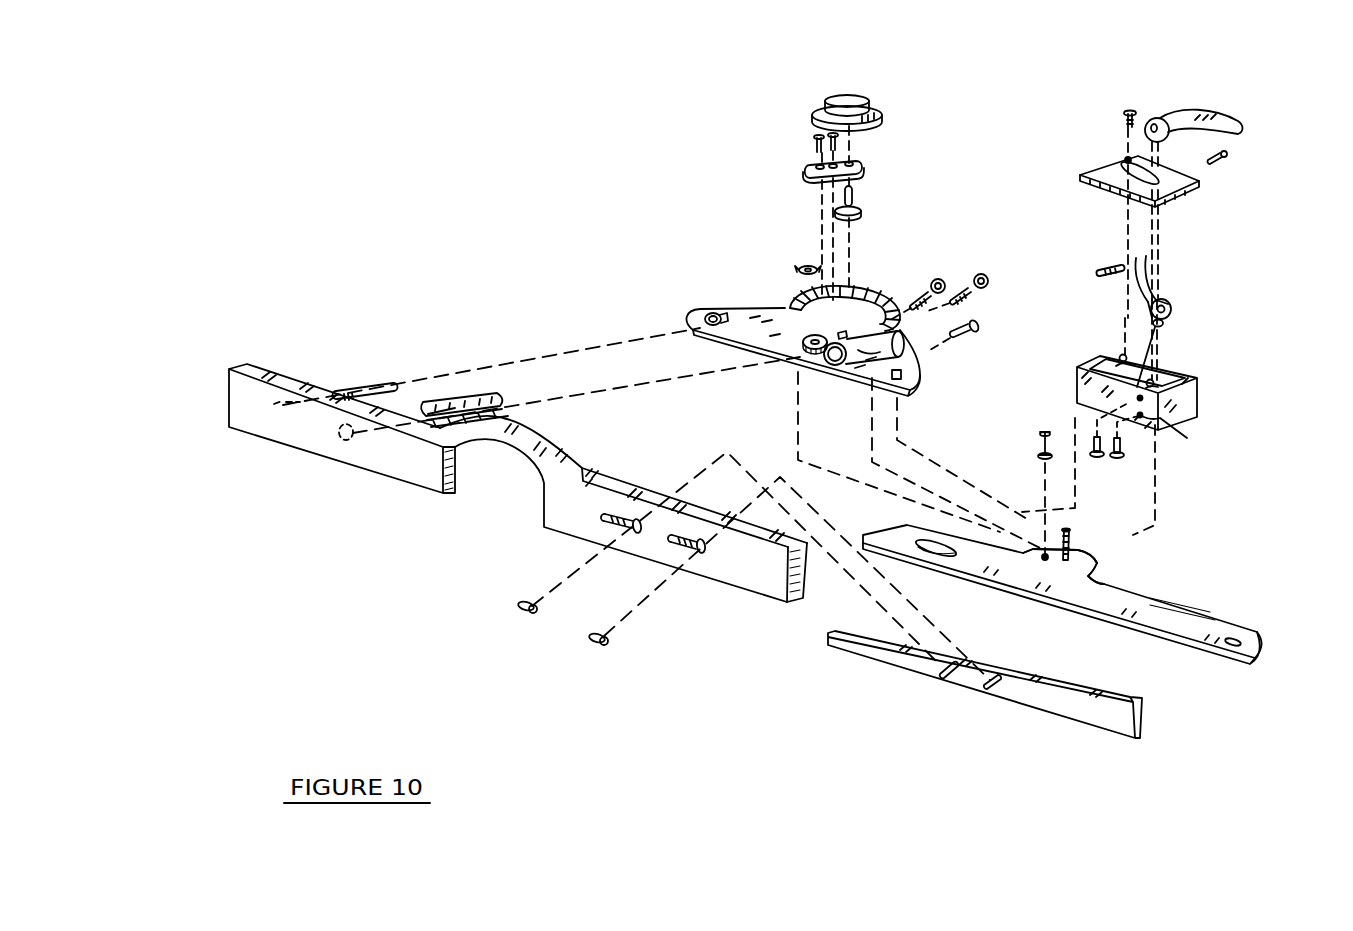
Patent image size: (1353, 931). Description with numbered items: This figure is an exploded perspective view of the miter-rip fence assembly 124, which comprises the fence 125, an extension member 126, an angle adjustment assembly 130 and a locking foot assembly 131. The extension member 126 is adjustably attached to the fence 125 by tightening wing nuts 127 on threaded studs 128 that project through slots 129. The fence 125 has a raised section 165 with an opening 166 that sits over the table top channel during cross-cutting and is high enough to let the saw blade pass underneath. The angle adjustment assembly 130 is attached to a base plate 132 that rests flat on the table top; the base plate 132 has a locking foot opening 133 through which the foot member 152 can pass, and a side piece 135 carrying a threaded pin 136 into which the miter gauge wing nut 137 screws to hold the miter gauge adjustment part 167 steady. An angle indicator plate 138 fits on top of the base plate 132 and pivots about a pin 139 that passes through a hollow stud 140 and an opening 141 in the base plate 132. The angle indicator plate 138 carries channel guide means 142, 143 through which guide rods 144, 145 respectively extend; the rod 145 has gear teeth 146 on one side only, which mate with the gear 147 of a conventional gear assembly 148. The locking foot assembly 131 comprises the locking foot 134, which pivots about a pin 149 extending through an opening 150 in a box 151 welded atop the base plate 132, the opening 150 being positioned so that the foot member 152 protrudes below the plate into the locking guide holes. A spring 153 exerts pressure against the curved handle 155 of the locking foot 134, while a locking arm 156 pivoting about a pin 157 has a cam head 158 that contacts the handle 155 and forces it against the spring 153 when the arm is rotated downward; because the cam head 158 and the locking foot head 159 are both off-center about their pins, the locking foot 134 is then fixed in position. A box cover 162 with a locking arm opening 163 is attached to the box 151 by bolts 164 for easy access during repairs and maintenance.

The miter-rip fence assembly 124 is at (566, 182).
The fence 125 is at (325, 432).
The extension member 126 is at (893, 657).
The wing nuts 127 is at (606, 645).
The threaded studs 128 is at (950, 680).
The slots 129 is at (672, 538).
The angle adjustment assembly 130 is at (935, 245).
The locking foot assembly 131 is at (1212, 358).
The base plate 132 is at (1073, 607).
The locking foot opening 133 is at (927, 554).
The locking foot 134 is at (1172, 283).
The side piece 135 is at (1112, 566).
The threaded pin 136 is at (1071, 543).
The miter gauge wing nut 137 is at (805, 262).
The angle indicator plate 138 is at (867, 380).
The pin 139 is at (978, 328).
The hollow stud 140 is at (903, 376).
The opening 141 is at (1238, 639).
The channel guide means 142 is at (710, 313).
The channel guide means 143 is at (831, 370).
The guide rod 144 is at (396, 382).
The guide rod 145 is at (503, 397).
The gear teeth 146 is at (457, 398).
The gear 147 is at (861, 209).
The gear assembly 148 is at (796, 133).
The pin 149 is at (1118, 460).
The opening 150 is at (1182, 433).
The box 151 is at (1195, 402).
The foot member 152 is at (1167, 325).
The spring 153 is at (1113, 263).
The curved handle 155 is at (1138, 288).
The locking arm 156 is at (1228, 120).
The pin 157 is at (1096, 458).
The cam head 158 is at (1153, 118).
The locking foot head 159 is at (1155, 318).
The box cover 162 is at (1177, 195).
The locking arm opening 163 is at (1121, 160).
The bolts 164 is at (1131, 110).
The raised section 165 is at (568, 462).
The opening 166 is at (509, 486).
The miter gauge adjustment part 167 is at (796, 303).